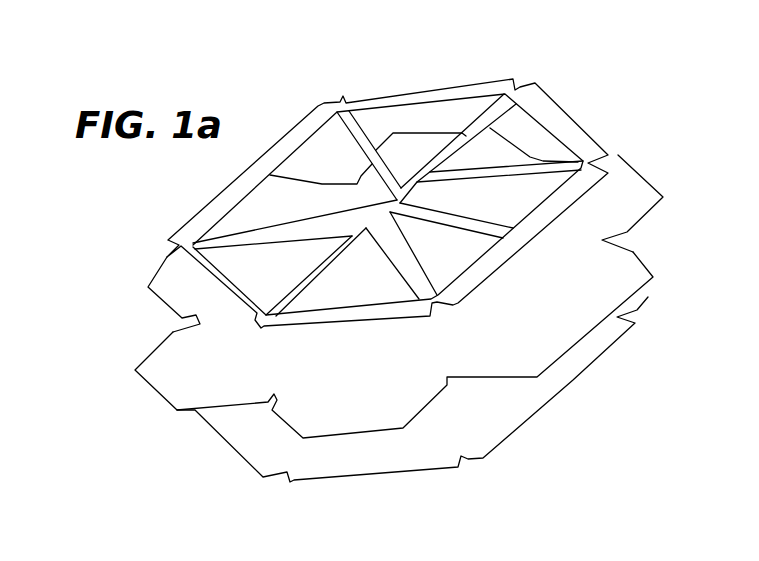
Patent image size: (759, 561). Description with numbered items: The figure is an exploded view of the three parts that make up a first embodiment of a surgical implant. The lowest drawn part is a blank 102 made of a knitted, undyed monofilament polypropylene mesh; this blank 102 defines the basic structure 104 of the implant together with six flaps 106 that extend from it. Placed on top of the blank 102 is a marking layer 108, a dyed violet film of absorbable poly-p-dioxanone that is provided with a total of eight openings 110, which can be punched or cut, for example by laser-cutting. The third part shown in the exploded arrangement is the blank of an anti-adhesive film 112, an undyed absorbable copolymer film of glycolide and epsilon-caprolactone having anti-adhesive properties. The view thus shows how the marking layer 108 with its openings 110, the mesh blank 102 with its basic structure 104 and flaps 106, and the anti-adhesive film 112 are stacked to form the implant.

The blank 102 is at (623, 272).
The basic structure 104 is at (371, 378).
The flaps 106 is at (633, 193).
The marking layer 108 is at (573, 128).
The openings 110 is at (510, 209).
The anti-adhesive film 112 is at (397, 452).